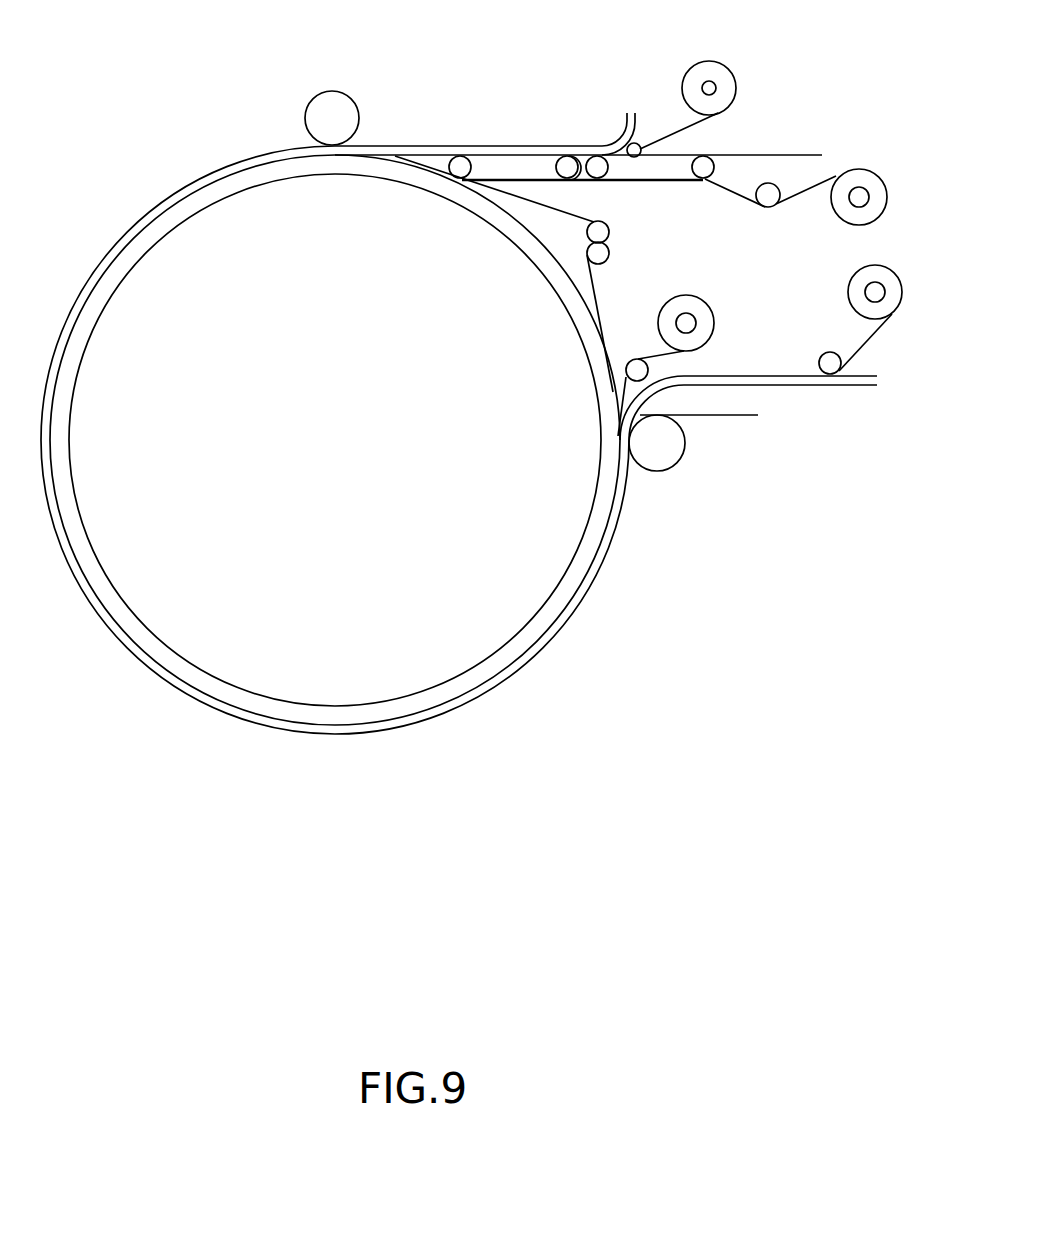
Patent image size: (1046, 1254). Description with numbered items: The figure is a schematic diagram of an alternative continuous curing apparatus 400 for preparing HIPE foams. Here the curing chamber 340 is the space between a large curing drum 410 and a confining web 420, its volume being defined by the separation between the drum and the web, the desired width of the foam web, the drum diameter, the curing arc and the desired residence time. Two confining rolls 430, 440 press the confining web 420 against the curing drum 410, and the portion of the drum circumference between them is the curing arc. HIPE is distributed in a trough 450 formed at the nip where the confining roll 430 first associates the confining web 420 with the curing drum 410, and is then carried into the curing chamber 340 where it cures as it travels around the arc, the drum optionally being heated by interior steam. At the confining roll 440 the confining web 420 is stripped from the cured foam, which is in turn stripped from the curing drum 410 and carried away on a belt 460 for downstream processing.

The curing apparatus 400 is at (810, 130).
The curing chamber 340 is at (473, 678).
The curing drum 410 is at (343, 665).
The confining web 420 is at (568, 615).
The confining roll 430 is at (683, 451).
The confining roll 440 is at (330, 88).
The trough 450 is at (672, 368).
The belt 460 is at (667, 165).